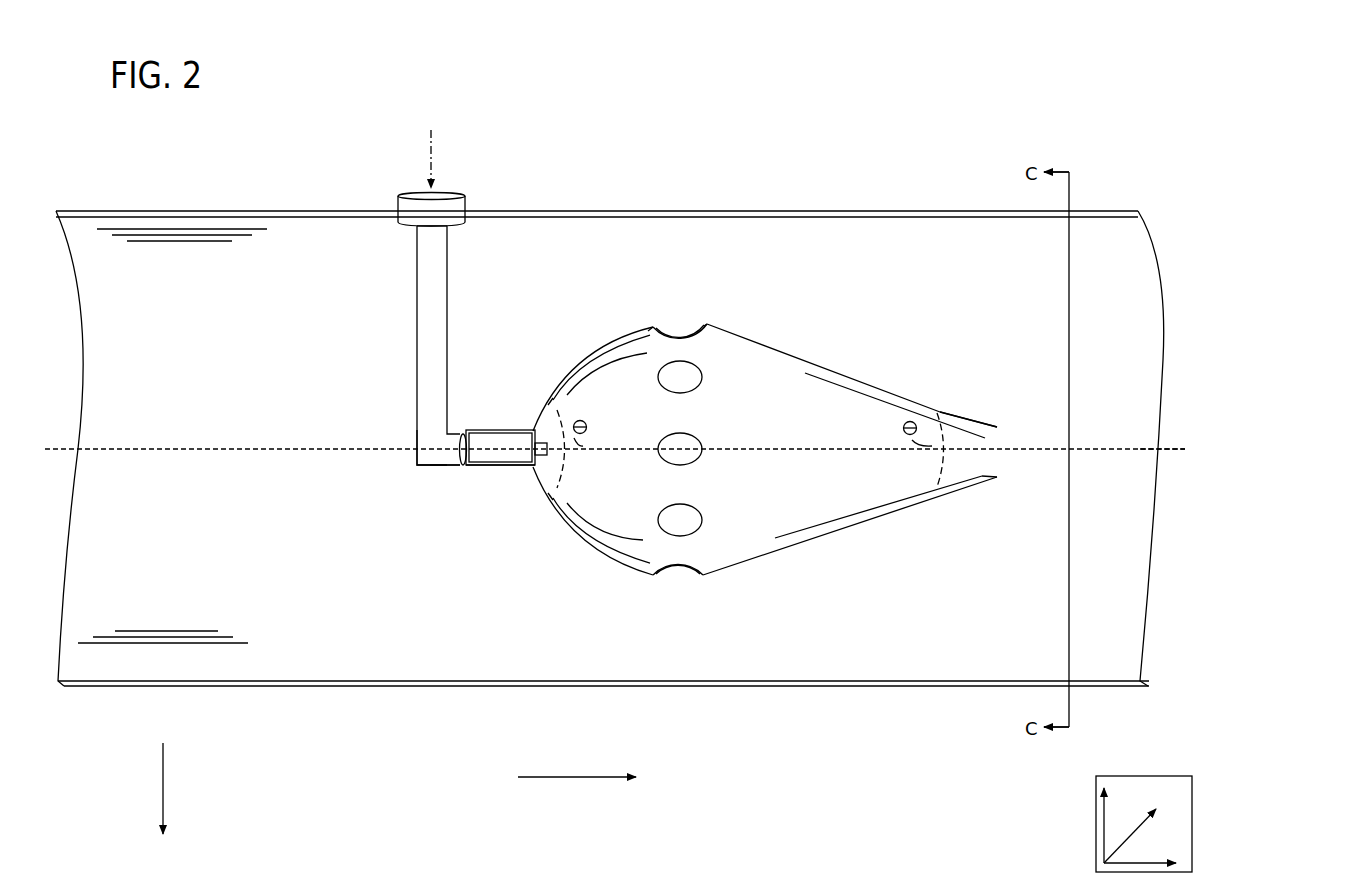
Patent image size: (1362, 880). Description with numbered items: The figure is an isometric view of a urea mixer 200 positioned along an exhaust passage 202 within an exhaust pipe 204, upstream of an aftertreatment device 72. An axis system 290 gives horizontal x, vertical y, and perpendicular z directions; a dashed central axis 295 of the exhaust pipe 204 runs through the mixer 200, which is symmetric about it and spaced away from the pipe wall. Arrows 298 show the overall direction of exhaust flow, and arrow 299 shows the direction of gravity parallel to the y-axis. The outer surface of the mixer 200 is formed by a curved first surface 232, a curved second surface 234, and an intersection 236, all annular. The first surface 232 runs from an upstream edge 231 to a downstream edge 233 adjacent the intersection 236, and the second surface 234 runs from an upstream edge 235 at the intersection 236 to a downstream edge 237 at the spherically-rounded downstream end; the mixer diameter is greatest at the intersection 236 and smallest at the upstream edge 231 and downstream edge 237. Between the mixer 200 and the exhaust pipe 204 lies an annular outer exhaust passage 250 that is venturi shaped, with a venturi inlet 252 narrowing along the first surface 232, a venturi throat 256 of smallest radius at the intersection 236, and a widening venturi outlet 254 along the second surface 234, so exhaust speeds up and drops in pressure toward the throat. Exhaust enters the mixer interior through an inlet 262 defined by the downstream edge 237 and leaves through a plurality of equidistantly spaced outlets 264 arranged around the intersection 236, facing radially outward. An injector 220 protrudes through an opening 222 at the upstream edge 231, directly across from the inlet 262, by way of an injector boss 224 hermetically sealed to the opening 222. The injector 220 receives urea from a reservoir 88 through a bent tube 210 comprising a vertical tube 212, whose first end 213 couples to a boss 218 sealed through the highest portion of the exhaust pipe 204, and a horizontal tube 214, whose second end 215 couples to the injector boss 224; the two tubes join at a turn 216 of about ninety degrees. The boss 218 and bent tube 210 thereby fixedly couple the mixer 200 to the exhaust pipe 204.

The mixer 200 is at (910, 264).
The exhaust passage 202 is at (615, 436).
The exhaust pipe 204 is at (1110, 211).
The reservoir 88 is at (433, 145).
The boss 218 is at (431, 210).
The bent tube 210 is at (432, 376).
The vertical tube 212 is at (416, 330).
The first end 213 is at (459, 234).
The horizontal tube 214 is at (440, 470).
The second end 215 is at (476, 470).
The turn 216 is at (421, 435).
The injector 220 is at (461, 466).
The opening 222 is at (527, 470).
The injector boss 224 is at (497, 431).
The outer exhaust passage 250 is at (748, 454).
The venturi inlet 252 is at (581, 437).
The venturi outlet 254 is at (869, 464).
The venturi throat 256 is at (705, 454).
The upstream edge 231 is at (521, 420).
The first surface 232 is at (578, 367).
The downstream edge 233 is at (645, 320).
The second surface 234 is at (805, 360).
The upstream edge 235 is at (706, 316).
The intersection 236 is at (678, 347).
The downstream edge 237 is at (998, 420).
The inlet 262 is at (1004, 462).
The outlets 264 is at (723, 427).
The aftertreatment device 72 is at (1244, 395).
The central axis 295 is at (1170, 452).
The axis system 290 is at (1157, 776).
The arrows 298 is at (545, 775).
The arrow 299 is at (163, 767).